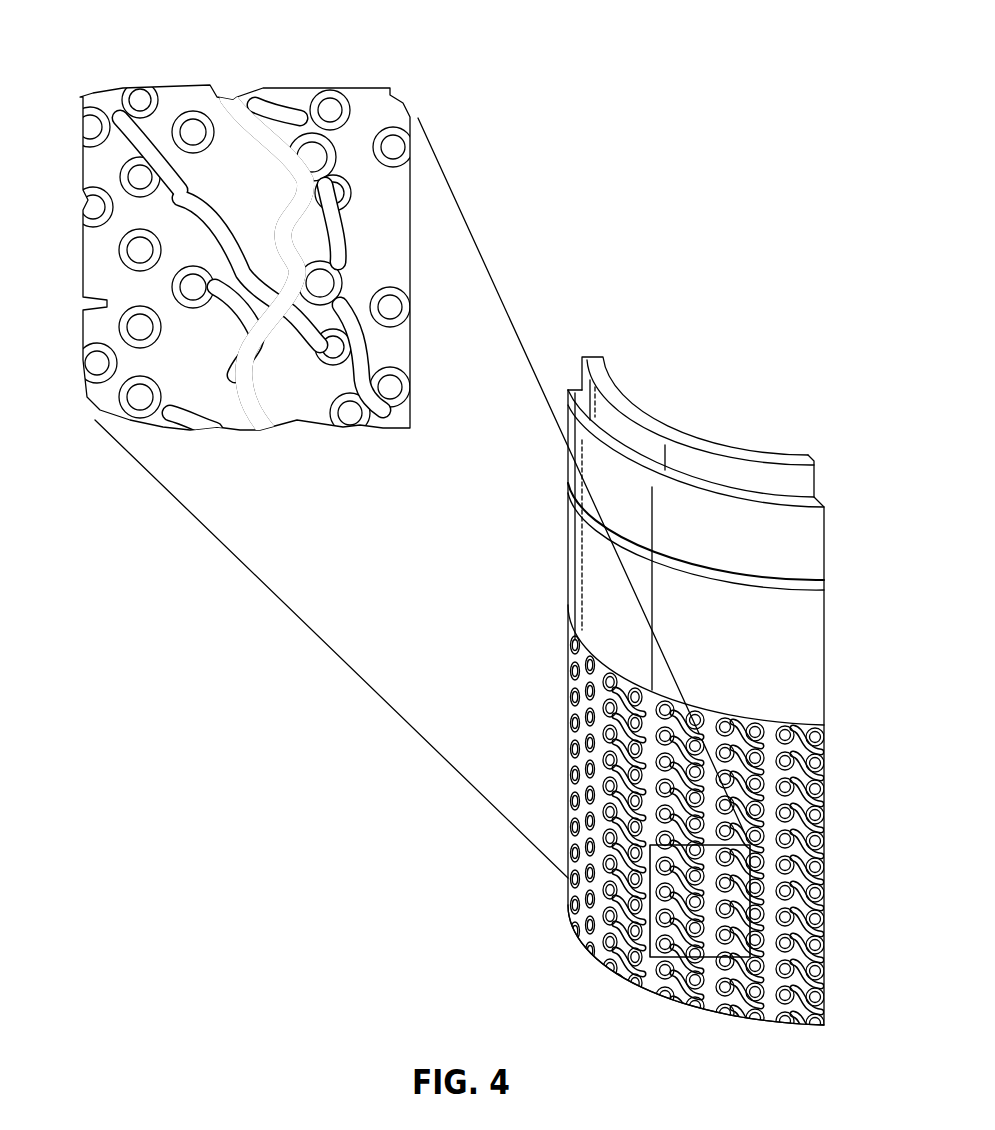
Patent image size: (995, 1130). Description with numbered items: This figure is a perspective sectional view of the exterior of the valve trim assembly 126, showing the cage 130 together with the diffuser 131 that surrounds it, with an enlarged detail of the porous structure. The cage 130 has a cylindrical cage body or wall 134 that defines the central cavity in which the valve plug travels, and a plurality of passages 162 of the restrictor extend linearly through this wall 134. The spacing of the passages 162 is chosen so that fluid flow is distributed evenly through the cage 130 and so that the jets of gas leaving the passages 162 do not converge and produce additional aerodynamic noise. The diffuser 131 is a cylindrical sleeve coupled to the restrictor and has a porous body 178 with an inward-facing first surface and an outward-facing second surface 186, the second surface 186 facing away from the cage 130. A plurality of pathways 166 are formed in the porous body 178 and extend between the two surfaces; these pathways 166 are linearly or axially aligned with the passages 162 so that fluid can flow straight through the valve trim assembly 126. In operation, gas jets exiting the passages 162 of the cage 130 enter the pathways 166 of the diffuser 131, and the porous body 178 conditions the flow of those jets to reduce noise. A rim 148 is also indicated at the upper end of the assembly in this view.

The valve trim assembly 126 is at (758, 366).
The cage 130 is at (823, 690).
The diffuser 131 is at (823, 758).
The cylindrical cage body or wall 134 is at (823, 612).
The rim 148 is at (583, 388).
The passages 162 is at (231, 97).
The pathways 166 is at (568, 745).
The porous body 178 is at (603, 963).
The second surface 186 is at (788, 848).